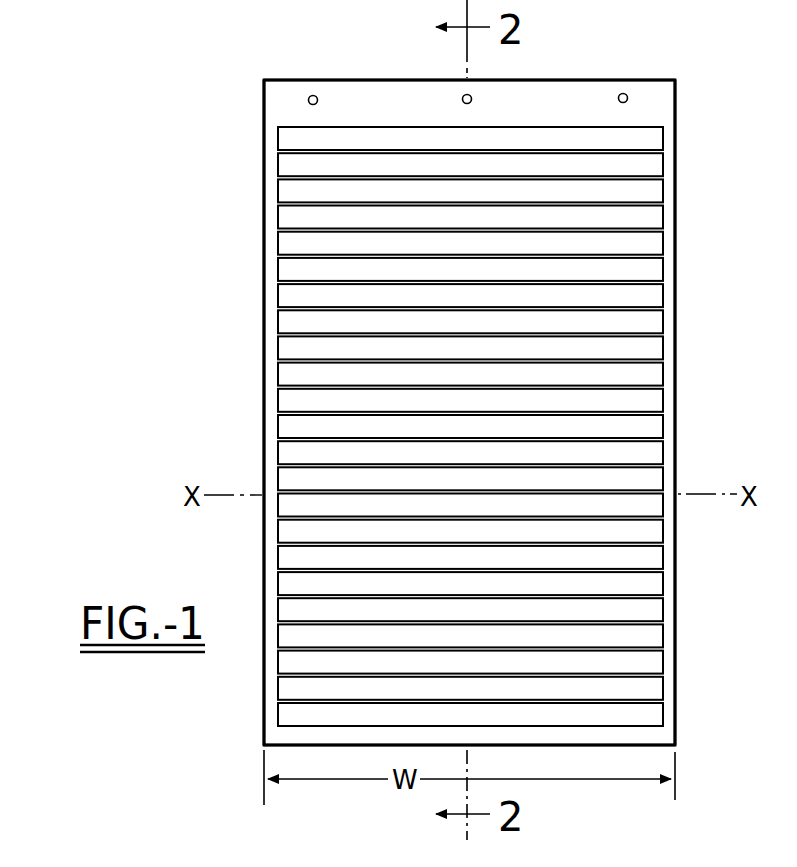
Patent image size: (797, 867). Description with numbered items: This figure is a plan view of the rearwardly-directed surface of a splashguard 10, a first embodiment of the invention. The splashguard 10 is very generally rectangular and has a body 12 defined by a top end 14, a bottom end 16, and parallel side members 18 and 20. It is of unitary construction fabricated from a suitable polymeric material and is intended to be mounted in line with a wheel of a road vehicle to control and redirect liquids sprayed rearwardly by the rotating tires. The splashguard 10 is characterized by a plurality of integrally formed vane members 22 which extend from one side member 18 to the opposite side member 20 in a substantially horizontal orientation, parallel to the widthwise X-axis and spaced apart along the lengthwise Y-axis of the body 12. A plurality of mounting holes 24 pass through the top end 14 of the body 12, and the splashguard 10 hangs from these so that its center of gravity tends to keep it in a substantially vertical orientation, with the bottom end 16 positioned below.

The splashguard 10 is at (236, 142).
The body 12 is at (260, 260).
The top end 14 is at (681, 87).
The bottom end 16 is at (260, 735).
The side member 18 is at (261, 371).
The side member 20 is at (680, 357).
The vane members 22 is at (290, 461).
The mounting holes 24 is at (314, 95).